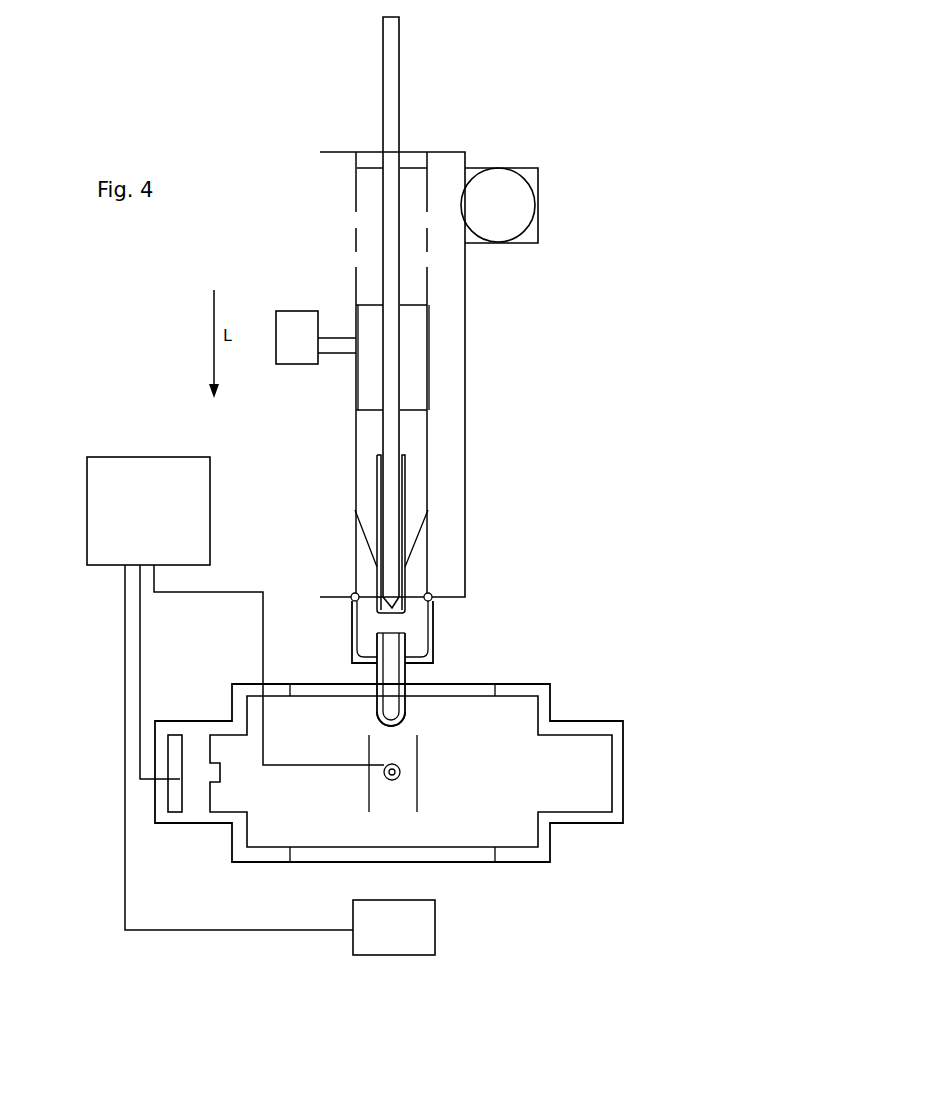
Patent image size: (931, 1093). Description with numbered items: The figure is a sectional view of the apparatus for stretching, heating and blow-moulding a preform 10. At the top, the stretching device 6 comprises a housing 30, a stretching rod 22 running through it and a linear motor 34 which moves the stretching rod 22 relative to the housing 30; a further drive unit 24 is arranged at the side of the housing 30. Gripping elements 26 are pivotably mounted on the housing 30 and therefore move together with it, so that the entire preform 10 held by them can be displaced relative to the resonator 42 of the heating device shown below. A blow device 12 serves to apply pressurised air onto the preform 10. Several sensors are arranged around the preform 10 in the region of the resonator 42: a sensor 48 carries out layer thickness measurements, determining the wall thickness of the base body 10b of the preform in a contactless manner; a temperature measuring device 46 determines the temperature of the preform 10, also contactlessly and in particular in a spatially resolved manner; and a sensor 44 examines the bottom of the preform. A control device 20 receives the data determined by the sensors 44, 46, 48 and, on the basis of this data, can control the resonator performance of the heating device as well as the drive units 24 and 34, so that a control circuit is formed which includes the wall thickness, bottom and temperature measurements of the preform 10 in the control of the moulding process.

The stretching device 6 is at (497, 482).
The preform 10 is at (388, 675).
The base body of the preform 10b is at (382, 702).
The blow device 12 is at (408, 523).
The control device 20 is at (182, 483).
The stretching rod 22 is at (393, 375).
The drive unit 24 is at (505, 205).
The gripping elements 26 is at (433, 632).
The housing 30 is at (448, 443).
The linear motor 34 is at (412, 270).
The resonator 42 is at (543, 708).
The sensor for examining the bottom of the preform 44 is at (403, 930).
The temperature measuring device 46 is at (173, 750).
The sensor for layer thickness measurements 48 is at (398, 775).